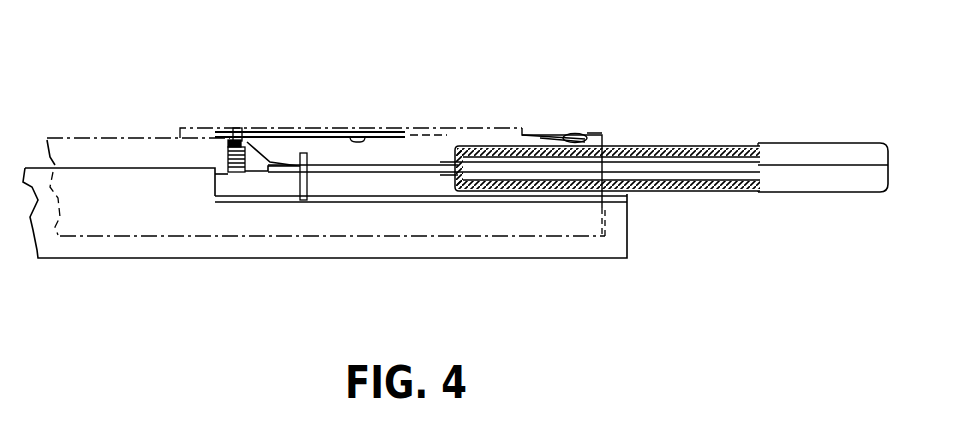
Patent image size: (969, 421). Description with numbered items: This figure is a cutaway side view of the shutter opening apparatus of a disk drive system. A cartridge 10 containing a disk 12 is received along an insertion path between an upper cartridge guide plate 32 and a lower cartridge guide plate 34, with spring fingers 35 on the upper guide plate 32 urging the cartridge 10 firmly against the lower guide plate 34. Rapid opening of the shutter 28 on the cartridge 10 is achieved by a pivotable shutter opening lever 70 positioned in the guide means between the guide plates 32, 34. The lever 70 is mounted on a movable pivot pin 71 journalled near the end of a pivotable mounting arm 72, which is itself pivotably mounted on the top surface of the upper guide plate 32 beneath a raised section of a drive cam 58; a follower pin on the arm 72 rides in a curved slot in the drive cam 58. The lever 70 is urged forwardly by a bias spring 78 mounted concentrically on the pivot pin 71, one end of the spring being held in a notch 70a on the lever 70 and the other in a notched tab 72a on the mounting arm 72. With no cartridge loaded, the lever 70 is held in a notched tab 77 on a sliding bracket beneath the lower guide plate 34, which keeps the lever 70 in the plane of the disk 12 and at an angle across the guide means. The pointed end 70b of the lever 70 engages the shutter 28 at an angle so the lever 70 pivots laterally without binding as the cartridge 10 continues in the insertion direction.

The cartridge 10 is at (803, 142).
The disk 12 is at (690, 167).
The shutter 28 is at (637, 153).
The upper cartridge guide plate 32 is at (122, 137).
The lower cartridge guide plate 34 is at (375, 187).
The spring fingers 35 is at (577, 133).
The drive cam 58 is at (423, 128).
The shutter opening lever 70 is at (365, 166).
The notch 70a is at (278, 172).
The pointed end 70b is at (447, 158).
The pivot pin 71 is at (237, 165).
The pivotable mounting arm 72 is at (282, 138).
The notched tab 72a is at (247, 128).
The notched tab 77 is at (305, 160).
The bias spring 78 is at (228, 152).